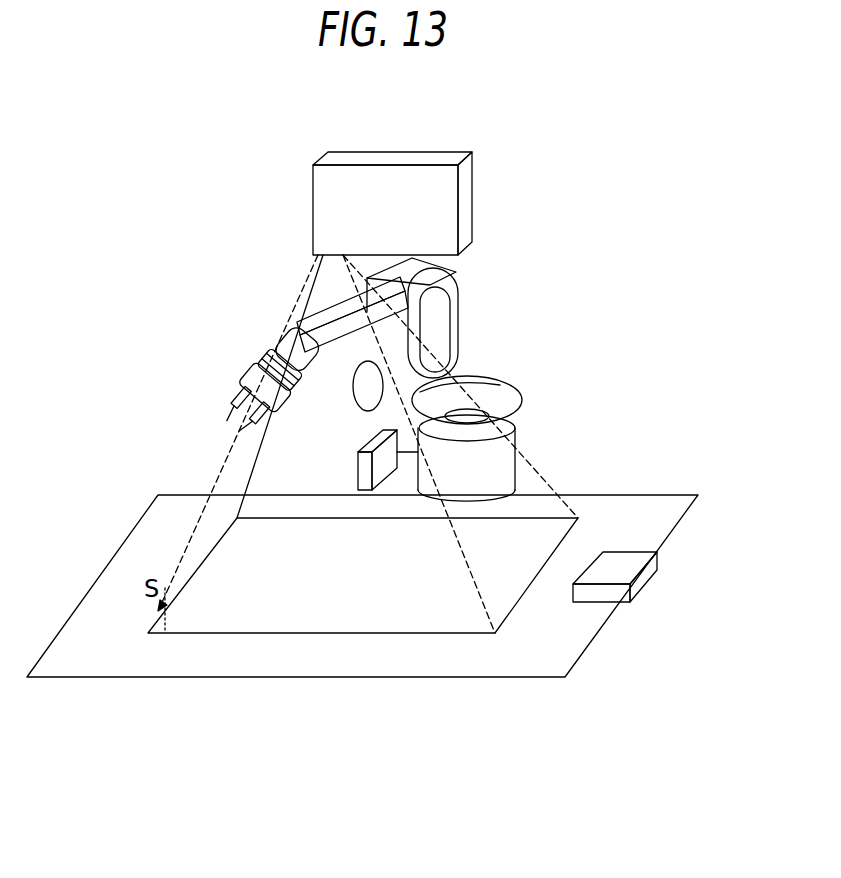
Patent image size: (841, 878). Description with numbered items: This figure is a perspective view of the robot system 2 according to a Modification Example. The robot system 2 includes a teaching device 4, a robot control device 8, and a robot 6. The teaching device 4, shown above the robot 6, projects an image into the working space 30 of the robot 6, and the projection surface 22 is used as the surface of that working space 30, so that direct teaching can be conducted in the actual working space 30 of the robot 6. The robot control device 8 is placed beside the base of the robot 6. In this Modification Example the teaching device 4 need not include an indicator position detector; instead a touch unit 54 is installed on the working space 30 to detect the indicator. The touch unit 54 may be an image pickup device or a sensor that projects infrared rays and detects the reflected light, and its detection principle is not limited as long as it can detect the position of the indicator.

The robot system 2 is at (549, 203).
The teaching device 4 is at (378, 148).
The robot 6 is at (493, 315).
The robot control device 8 is at (379, 432).
The projection surface 22 is at (236, 519).
The working space 30 is at (340, 613).
The touch unit 54 is at (645, 558).